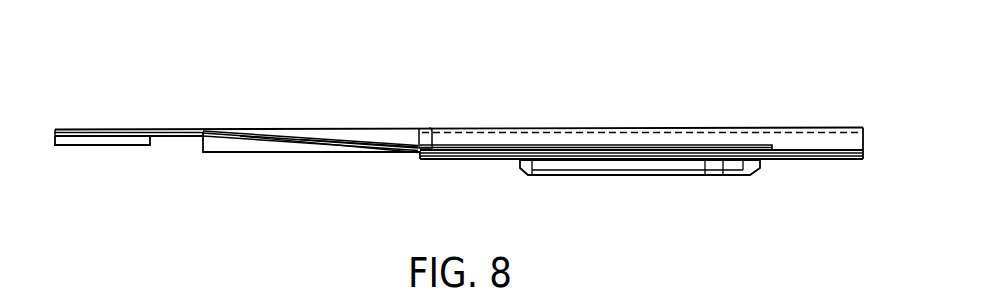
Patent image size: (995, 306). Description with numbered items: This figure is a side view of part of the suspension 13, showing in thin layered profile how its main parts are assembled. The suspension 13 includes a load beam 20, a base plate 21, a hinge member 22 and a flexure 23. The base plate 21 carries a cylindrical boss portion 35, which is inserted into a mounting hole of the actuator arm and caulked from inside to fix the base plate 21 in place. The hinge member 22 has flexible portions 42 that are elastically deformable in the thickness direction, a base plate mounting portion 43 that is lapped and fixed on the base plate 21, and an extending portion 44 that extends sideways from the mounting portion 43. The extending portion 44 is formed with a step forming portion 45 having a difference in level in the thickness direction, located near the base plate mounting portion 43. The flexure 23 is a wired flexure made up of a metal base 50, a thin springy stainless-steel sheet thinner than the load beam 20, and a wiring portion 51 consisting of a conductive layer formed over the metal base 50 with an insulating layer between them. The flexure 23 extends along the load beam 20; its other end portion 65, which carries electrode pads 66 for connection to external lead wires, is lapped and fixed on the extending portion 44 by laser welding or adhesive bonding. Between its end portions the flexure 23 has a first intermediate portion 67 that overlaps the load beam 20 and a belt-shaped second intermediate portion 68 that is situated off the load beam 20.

The suspension 13 is at (255, 108).
The load beam 20 is at (112, 148).
The base plate 21 is at (247, 152).
The hinge member 22 is at (477, 126).
The flexure 23 is at (404, 142).
The boss portion 35 is at (642, 178).
The flexible portions 42 is at (173, 128).
The base plate mounting portion 43 is at (585, 125).
The extending portion 44 is at (802, 162).
The step forming portion 45 is at (780, 137).
The metal base 50 is at (390, 157).
The wiring portion 51 is at (433, 128).
The other end portion 65 is at (828, 150).
The electrode pads 66 is at (693, 145).
The first intermediate portion 67 is at (92, 128).
The second intermediate portion 68 is at (305, 152).